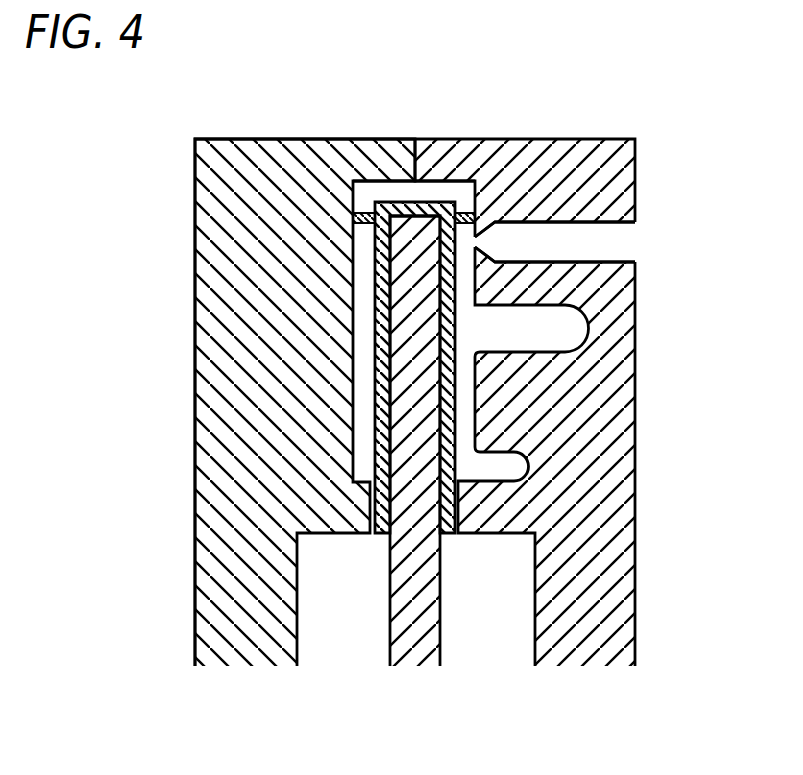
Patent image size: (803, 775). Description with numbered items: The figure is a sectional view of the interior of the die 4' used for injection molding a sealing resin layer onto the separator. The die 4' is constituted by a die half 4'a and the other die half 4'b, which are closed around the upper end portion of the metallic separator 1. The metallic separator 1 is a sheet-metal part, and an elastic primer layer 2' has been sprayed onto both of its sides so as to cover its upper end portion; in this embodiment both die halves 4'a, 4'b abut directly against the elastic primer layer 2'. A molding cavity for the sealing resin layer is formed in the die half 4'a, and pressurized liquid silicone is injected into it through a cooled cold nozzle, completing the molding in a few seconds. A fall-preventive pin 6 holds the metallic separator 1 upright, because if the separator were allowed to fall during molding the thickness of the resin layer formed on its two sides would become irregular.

The die 4' is at (415, 340).
The die half 4'a is at (525, 369).
The other die half 4'b is at (305, 369).
The fall-preventive pin 6 is at (354, 210).
The elastic primer layer 2' is at (278, 367).
The metallic separator 1 is at (422, 632).